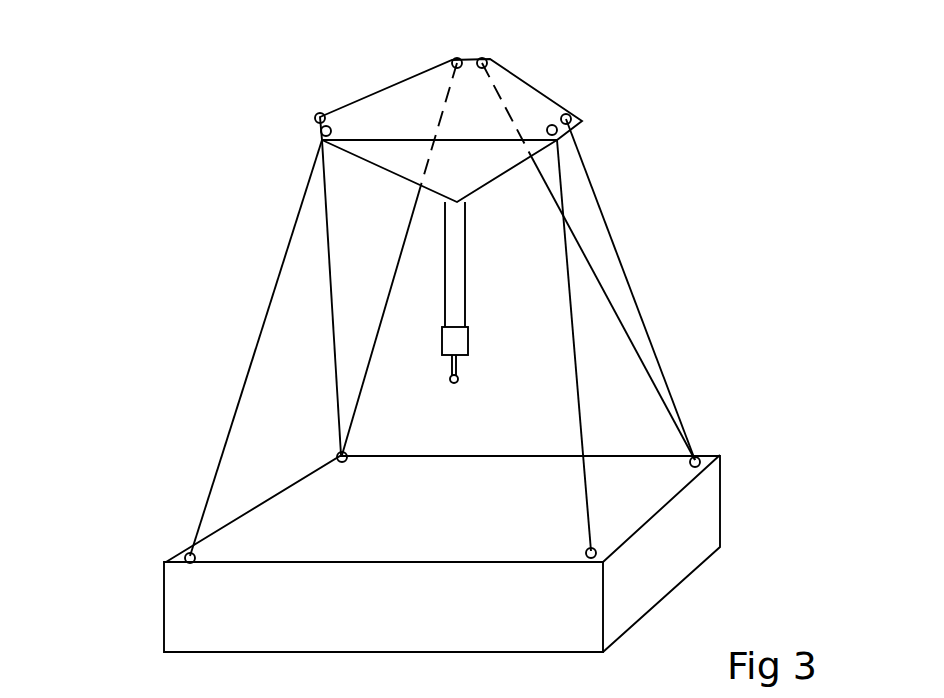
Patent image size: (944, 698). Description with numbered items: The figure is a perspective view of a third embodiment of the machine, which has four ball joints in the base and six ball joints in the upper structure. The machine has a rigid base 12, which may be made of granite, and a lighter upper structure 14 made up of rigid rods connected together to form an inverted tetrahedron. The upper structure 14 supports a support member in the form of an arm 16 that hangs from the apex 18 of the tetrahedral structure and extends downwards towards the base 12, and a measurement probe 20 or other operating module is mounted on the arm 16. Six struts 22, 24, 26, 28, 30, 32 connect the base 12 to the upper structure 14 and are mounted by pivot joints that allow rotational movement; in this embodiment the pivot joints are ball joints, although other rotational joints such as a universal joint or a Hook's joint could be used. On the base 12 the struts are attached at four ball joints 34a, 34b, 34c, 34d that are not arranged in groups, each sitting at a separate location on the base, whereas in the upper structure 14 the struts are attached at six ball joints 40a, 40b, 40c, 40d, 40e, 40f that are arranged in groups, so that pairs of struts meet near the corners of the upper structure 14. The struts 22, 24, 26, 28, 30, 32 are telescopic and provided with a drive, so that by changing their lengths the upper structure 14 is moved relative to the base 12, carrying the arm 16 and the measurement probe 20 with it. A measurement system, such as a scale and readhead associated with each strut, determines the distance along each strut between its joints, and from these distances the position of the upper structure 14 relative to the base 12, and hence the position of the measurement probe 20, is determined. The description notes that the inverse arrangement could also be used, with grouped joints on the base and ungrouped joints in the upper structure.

The base 12 is at (175, 623).
The upper structure 14 is at (537, 100).
The arm 16 is at (472, 330).
The apex 18 is at (468, 228).
The measurement probe 20 is at (450, 352).
The strut 22 is at (235, 413).
The strut 24 is at (333, 355).
The strut 26 is at (378, 312).
The strut 28 is at (585, 280).
The strut 30 is at (643, 317).
The strut 32 is at (580, 430).
The ball joint 34a is at (185, 557).
The ball joint 34b is at (332, 461).
The ball joint 34c is at (705, 455).
The ball joint 34d is at (596, 553).
The ball joint 40a is at (320, 140).
The ball joint 40b is at (318, 115).
The ball joint 40c is at (450, 61).
The ball joint 40d is at (492, 60).
The ball joint 40e is at (572, 117).
The ball joint 40f is at (562, 143).